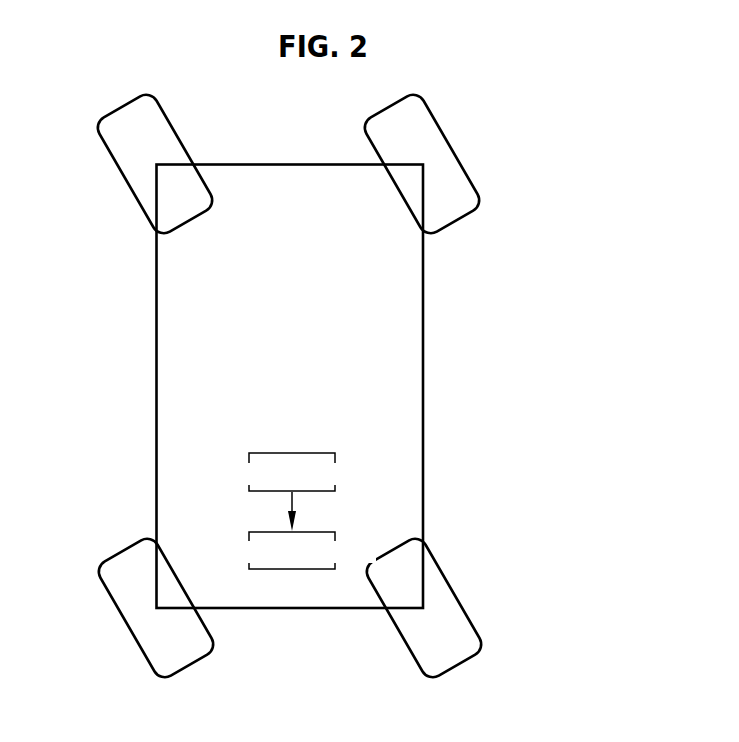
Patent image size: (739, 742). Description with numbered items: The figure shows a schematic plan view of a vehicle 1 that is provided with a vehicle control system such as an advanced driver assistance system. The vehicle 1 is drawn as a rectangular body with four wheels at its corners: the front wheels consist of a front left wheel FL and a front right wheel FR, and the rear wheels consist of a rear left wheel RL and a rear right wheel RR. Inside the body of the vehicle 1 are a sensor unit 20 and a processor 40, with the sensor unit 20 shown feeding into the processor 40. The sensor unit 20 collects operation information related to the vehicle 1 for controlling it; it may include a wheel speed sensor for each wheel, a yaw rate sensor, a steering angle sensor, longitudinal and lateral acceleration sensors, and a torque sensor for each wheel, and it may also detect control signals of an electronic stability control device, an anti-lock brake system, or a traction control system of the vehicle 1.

The vehicle 1 is at (423, 364).
The sensor unit 20 is at (335, 455).
The processor 40 is at (335, 535).
The front left wheel FL is at (138, 212).
The front right wheel FR is at (460, 222).
The rear left wheel RL is at (125, 543).
The rear right wheel RR is at (477, 622).